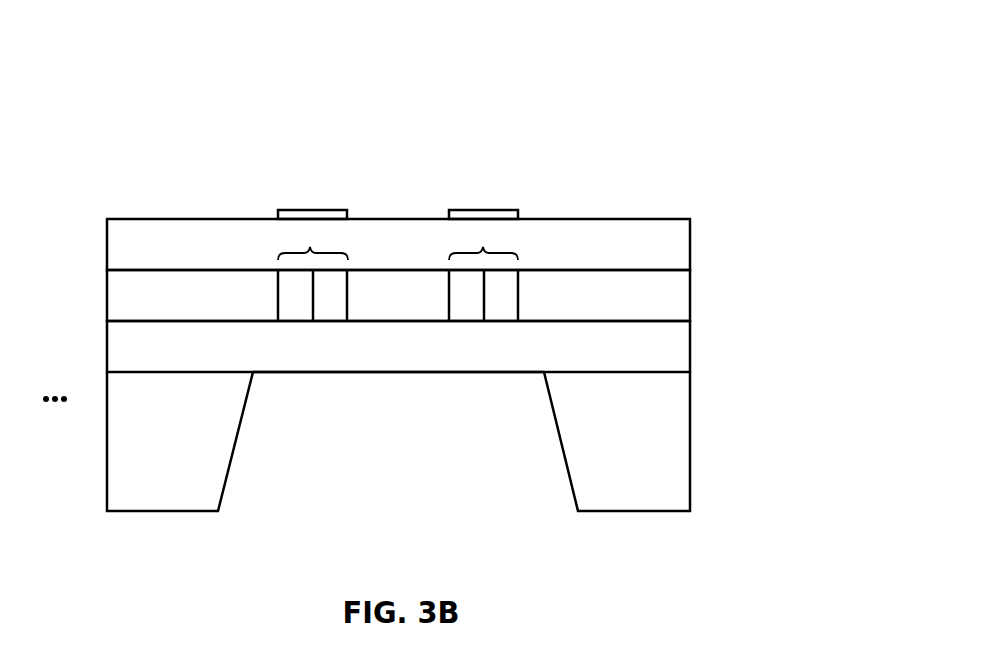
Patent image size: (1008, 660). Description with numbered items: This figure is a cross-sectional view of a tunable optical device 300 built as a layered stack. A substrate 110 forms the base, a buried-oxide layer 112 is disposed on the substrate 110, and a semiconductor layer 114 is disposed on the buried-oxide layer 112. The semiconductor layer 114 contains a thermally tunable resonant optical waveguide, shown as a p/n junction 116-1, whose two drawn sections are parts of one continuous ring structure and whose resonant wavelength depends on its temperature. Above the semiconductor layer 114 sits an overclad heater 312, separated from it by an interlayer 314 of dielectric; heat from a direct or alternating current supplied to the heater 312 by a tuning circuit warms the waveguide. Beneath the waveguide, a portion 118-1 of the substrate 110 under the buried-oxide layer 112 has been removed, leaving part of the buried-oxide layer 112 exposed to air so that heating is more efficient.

The tunable optical device 300 is at (692, 92).
The interlayer 314 is at (189, 243).
The semiconductor layer 114 is at (171, 297).
The p/n junction 116-1 is at (310, 247).
The heater 312 is at (460, 213).
The buried-oxide layer 112 is at (648, 344).
The substrate 110 is at (183, 458).
The portion 118-1 is at (407, 425).